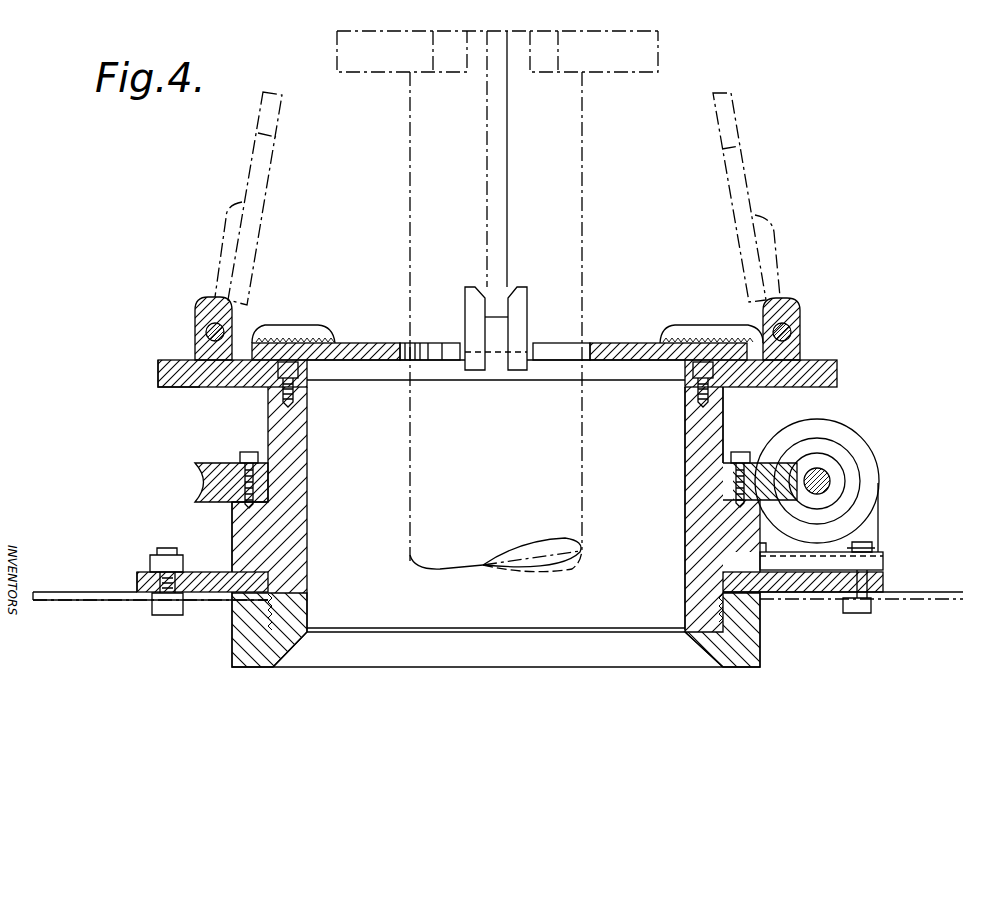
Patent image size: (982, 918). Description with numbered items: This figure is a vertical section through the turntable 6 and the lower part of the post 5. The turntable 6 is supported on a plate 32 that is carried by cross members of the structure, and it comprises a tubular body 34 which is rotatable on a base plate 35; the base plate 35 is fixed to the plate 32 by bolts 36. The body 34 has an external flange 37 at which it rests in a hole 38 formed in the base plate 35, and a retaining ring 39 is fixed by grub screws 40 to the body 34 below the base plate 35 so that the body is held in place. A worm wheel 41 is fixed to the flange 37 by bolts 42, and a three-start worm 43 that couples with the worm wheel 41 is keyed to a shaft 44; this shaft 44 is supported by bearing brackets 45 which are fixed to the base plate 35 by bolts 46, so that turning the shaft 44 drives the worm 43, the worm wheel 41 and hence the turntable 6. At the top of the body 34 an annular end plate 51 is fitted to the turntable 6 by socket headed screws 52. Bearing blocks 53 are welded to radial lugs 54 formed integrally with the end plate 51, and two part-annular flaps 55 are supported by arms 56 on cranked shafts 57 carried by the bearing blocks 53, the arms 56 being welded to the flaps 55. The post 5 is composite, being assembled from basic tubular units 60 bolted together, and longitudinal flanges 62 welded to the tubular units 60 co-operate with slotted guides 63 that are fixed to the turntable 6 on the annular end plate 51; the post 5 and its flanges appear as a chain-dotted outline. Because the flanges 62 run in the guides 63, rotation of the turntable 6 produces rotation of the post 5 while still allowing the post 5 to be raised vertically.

The post 5 is at (563, 182).
The turntable 6 is at (295, 512).
The plate 32 is at (80, 566).
The tubular body 34 is at (688, 435).
The base plate 35 is at (215, 595).
The bolts 36 is at (160, 572).
The external flange 37 is at (245, 510).
The hole 38 is at (270, 578).
The retaining ring 39 is at (733, 655).
The grub screws 40 is at (760, 628).
The worm wheel 41 is at (197, 470).
The bolts 42 is at (252, 452).
The three-start worm 43 is at (826, 472).
The shaft 44 is at (830, 470).
The bearing brackets 45 is at (876, 537).
The bolts 46 is at (880, 553).
The annular end plate 51 is at (160, 370).
The socket headed screws 52 is at (307, 372).
The bearing blocks 53 is at (200, 308).
The radial lugs 54 is at (193, 383).
The part-annular flaps 55 is at (271, 181).
The arms 56 is at (277, 330).
The cranked shafts 57 is at (205, 332).
The tubular units 60 is at (413, 167).
The longitudinal flanges 62 is at (497, 170).
The slotted guides 63 is at (467, 305).